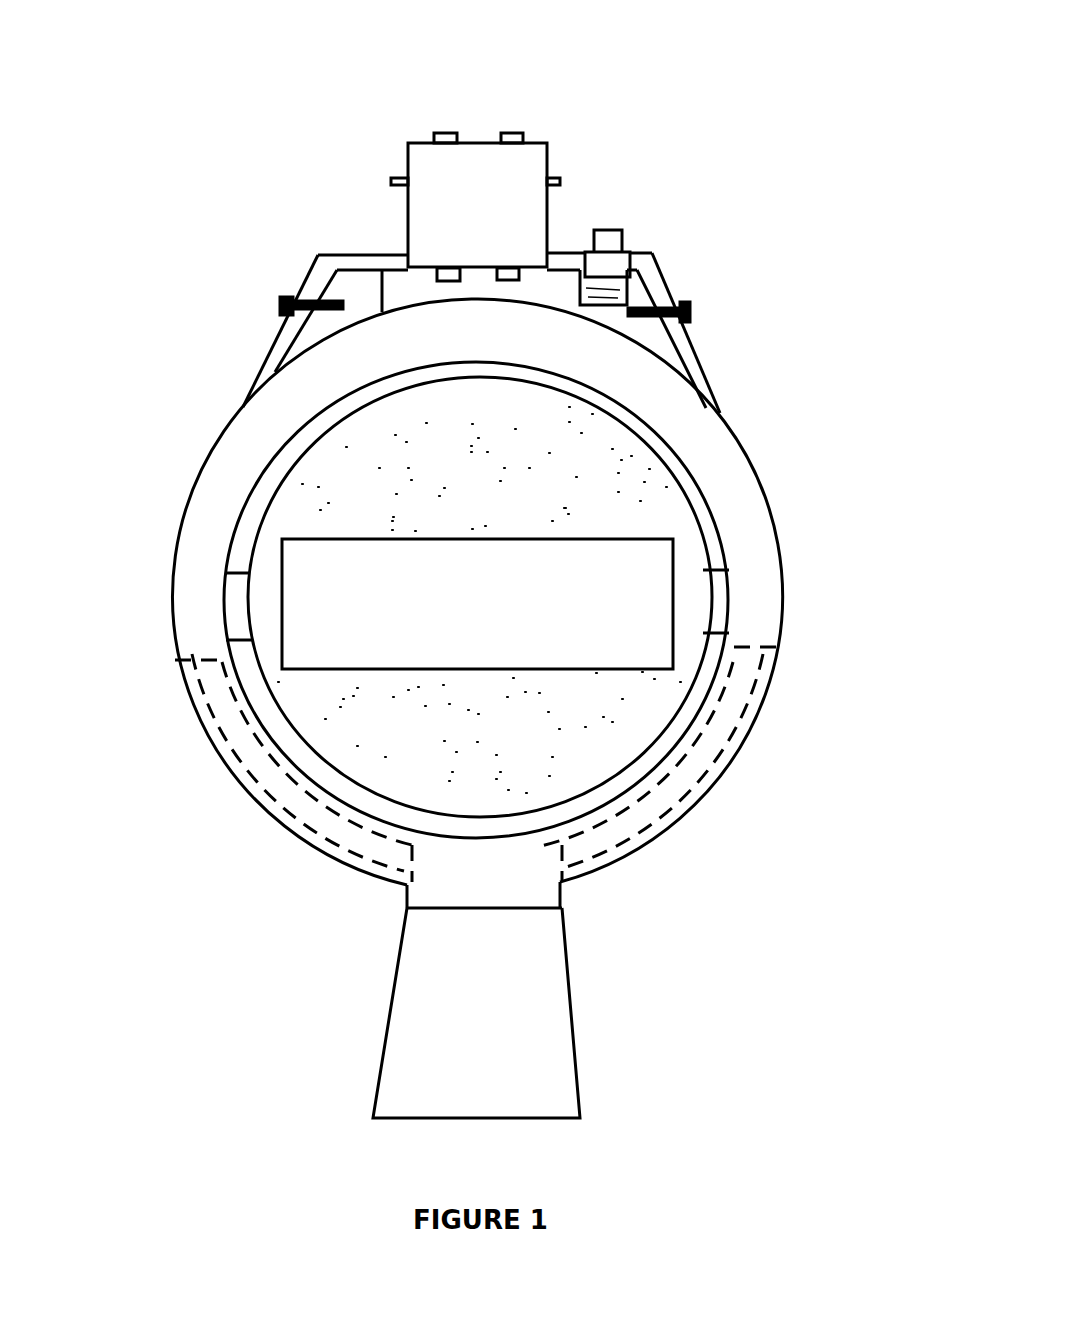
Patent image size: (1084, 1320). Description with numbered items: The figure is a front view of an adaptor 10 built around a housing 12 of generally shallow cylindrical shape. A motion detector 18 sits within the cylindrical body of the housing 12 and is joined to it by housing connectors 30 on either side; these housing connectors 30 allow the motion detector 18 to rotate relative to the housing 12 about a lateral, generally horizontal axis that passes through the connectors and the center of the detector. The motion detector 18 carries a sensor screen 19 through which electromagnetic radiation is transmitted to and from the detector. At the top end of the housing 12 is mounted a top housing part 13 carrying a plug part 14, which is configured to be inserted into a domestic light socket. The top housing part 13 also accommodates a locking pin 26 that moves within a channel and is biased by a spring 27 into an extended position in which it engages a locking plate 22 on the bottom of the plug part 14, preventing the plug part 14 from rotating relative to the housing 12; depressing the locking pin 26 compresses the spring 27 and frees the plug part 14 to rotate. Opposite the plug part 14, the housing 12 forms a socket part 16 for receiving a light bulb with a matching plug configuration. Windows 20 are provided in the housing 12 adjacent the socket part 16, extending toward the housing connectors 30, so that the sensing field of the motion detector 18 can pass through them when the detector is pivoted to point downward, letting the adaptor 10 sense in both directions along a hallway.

The adaptor 10 is at (738, 176).
The housing 12 is at (738, 395).
The top housing part 13 is at (265, 333).
The plug part 14 is at (582, 137).
The socket part 16 is at (595, 1018).
The motion detector 18 is at (640, 493).
The sensor screen 19 is at (645, 615).
The windows 20 is at (280, 812).
The locking plate 22 is at (385, 262).
The locking pin 26 is at (624, 232).
The spring 27 is at (610, 287).
The housing connectors 30 is at (232, 630).